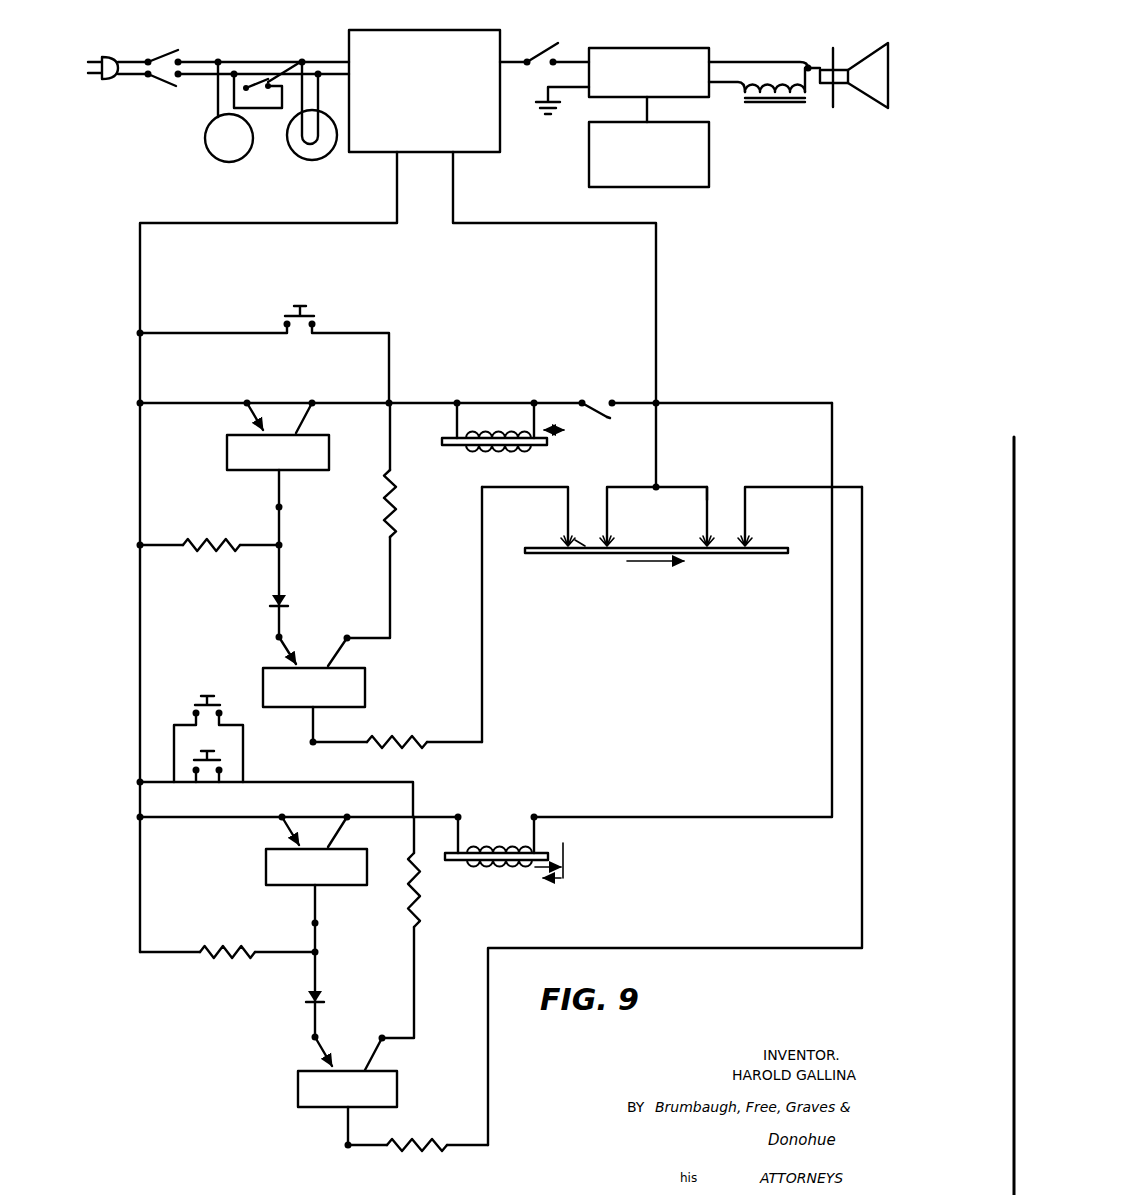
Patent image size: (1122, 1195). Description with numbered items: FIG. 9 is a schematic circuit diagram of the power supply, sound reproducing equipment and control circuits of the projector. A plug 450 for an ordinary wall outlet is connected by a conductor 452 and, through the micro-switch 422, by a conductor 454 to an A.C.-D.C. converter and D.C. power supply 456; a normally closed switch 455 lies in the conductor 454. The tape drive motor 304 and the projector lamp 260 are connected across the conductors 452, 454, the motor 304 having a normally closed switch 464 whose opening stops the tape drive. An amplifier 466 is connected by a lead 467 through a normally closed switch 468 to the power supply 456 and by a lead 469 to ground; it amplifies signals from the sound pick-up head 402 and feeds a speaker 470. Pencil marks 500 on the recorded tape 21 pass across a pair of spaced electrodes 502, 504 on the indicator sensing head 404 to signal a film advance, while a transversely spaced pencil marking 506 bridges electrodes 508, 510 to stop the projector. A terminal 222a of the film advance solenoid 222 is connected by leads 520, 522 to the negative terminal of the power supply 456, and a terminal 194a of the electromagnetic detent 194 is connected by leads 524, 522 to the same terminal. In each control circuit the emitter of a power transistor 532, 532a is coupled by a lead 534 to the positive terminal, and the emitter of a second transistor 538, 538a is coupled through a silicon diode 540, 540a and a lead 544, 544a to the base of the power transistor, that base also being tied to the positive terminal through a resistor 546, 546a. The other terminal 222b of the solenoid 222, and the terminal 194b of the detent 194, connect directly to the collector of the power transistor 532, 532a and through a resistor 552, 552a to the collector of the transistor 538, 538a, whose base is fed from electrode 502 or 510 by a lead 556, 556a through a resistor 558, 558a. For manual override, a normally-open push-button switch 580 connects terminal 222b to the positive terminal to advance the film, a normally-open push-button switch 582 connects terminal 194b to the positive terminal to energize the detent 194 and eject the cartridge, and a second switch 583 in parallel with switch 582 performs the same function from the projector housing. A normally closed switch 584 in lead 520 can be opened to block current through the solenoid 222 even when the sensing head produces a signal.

The plug 450 is at (113, 57).
The conductor 452 is at (133, 79).
The normally closed switch 455 is at (186, 48).
The micro-switch 422 is at (168, 87).
The conductor 454 is at (250, 60).
The normally closed switch 464 is at (300, 57).
The tape drive motor 304 is at (226, 163).
The projector lamp 260 is at (313, 161).
The A.C.-D.C. converter and D.C. power supply 456 is at (459, 30).
The lead 467 is at (515, 58).
The normally closed switch 468 is at (559, 50).
The lead 469 is at (553, 105).
The amplifier 466 is at (686, 48).
The sound pick-up head 402 is at (709, 166).
The speaker 470 is at (803, 62).
The lead 534 is at (140, 298).
The lead 522 is at (656, 325).
The normally-open push-button switch 580 is at (313, 318).
The lead 524 is at (707, 811).
The lead 520 is at (579, 400).
The normally closed switch 584 is at (616, 420).
The film advance solenoid 222 is at (478, 452).
The terminal of the solenoid 222a is at (534, 403).
The terminal of the solenoid 222b is at (462, 396).
The power transistor 532 is at (227, 452).
The lead 544 is at (283, 573).
The resistor 546 is at (233, 545).
The silicon diode 540 is at (290, 604).
The resistor 552 is at (396, 522).
The second transistor 538 is at (266, 668).
The resistor 558 is at (408, 742).
The lead 556 is at (483, 675).
The second switch 583 is at (202, 697).
The normally-open push-button switch 582 is at (211, 756).
The electromagnetic detent 194 is at (516, 866).
The terminal of the detent 194a is at (534, 817).
The terminal of the detent 194b is at (470, 810).
The power transistor 532a is at (266, 866).
The lead 544a is at (318, 973).
The resistor 546a is at (230, 956).
The silicon diode 540a is at (324, 1000).
The resistor 552a is at (420, 911).
The second transistor 538a is at (298, 1093).
The resistor 558a is at (447, 1145).
The lead 556a is at (745, 948).
The indicator sensing head 404 is at (718, 560).
The pencil marks 500 is at (586, 542).
The electrode 502 is at (565, 520).
The electrode 504 is at (610, 515).
The pencil marking 506 is at (726, 540).
The electrode 508 is at (710, 494).
The electrode 510 is at (752, 518).
The tape 21 is at (770, 556).